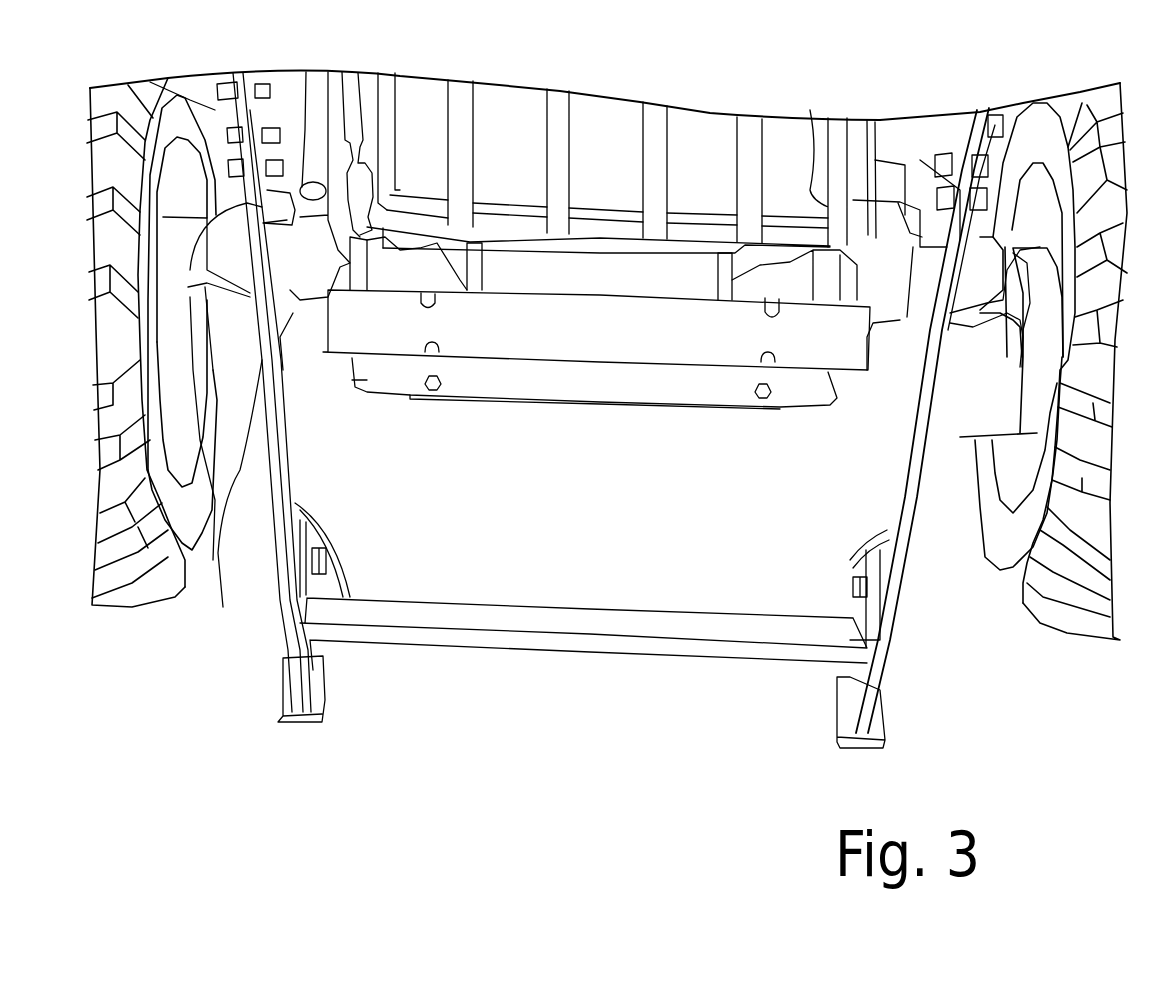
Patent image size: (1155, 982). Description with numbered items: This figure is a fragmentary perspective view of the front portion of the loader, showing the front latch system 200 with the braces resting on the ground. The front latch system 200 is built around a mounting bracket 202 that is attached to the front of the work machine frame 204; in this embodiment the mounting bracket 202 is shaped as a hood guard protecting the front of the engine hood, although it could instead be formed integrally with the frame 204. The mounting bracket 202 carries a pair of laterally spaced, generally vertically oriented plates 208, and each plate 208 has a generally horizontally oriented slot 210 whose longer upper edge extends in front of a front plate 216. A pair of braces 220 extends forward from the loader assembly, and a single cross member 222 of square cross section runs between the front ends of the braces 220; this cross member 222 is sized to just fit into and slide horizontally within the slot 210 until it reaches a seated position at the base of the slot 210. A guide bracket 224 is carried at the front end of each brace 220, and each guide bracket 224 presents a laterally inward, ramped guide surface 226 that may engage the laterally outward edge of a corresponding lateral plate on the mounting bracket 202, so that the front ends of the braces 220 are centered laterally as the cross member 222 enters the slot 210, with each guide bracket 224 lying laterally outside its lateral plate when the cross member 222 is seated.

The front latch system 200 is at (468, 423).
The mounting bracket 202 is at (805, 406).
The work machine frame 204 is at (233, 506).
The plates 208 is at (306, 72).
The slot 210 is at (830, 290).
The front plate 216 is at (573, 343).
The braces 220 is at (297, 457).
The cross member 222 is at (647, 627).
The guide brackets 224 is at (333, 528).
The ramped guide surface 226 is at (347, 580).